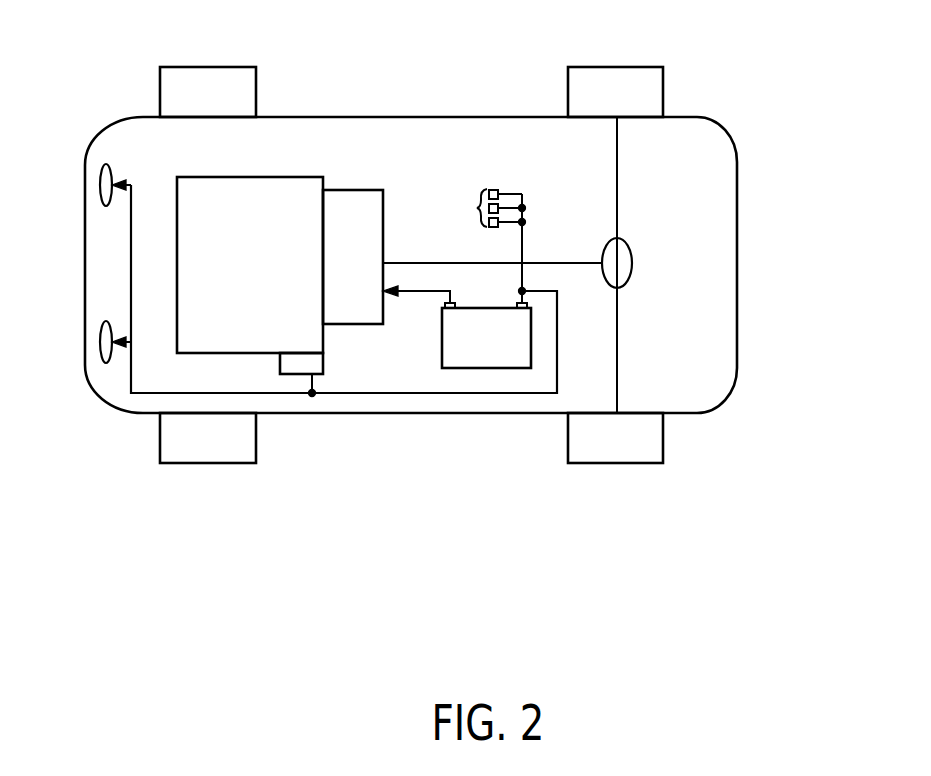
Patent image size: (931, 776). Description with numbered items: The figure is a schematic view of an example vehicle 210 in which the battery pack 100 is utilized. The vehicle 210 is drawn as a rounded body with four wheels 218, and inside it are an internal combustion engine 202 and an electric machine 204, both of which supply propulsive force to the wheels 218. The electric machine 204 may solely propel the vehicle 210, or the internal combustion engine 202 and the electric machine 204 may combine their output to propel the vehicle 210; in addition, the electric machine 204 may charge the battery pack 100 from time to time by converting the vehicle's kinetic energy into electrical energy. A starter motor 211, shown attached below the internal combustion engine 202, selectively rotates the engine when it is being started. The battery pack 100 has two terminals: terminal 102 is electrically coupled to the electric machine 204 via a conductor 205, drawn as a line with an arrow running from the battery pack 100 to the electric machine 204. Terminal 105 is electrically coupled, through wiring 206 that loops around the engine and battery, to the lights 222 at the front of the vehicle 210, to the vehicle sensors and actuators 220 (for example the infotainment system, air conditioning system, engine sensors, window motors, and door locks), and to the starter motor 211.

The battery pack 100 is at (486, 338).
The terminal 102 is at (445, 306).
The terminal 105 is at (518, 303).
The internal combustion engine 202 is at (250, 265).
The electric machine 204 is at (462, 257).
The conductor 205 is at (410, 291).
The electrical wiring 206 is at (557, 330).
The vehicle 210 is at (710, 118).
The starter motor 211 is at (280, 366).
The wheels 218 is at (411, 265).
The vehicle sensors and actuators 220 is at (482, 208).
The lights 222 is at (100, 186).